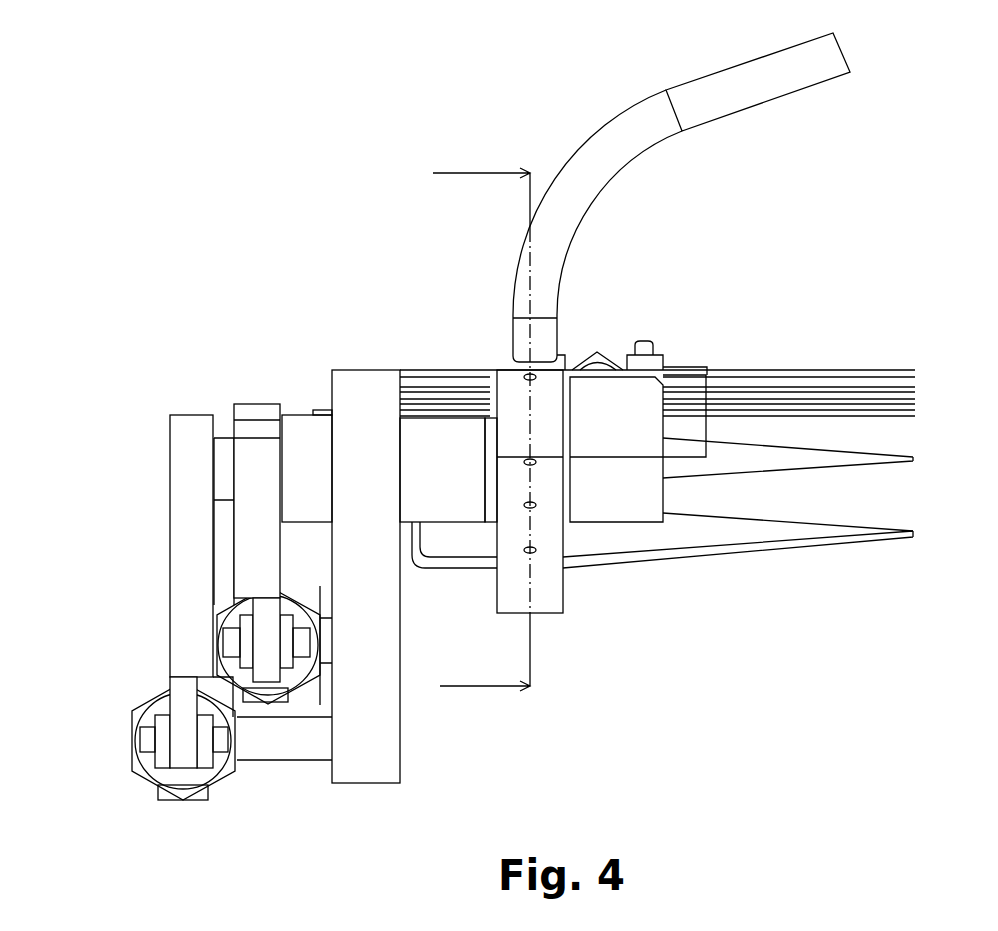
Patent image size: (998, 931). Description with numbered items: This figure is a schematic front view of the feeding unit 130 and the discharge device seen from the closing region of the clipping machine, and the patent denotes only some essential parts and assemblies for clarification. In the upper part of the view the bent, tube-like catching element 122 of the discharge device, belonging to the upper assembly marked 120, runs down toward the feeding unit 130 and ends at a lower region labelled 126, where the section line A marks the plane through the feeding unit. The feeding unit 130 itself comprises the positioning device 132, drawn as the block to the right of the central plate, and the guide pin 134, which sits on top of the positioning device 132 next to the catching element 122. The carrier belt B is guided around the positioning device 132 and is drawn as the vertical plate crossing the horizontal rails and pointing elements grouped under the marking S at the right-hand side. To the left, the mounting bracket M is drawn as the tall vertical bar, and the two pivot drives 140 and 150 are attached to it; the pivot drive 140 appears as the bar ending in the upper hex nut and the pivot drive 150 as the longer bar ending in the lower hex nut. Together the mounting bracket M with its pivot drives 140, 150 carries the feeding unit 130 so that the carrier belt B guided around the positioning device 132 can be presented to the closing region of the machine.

The hose assembly 120 is at (752, 204).
The catching element 122 is at (718, 108).
The hose lower fitting 126 is at (545, 340).
The feeding unit 130 is at (749, 632).
The positioning device 132 is at (605, 500).
The guide pin 134 is at (645, 352).
The pivot drive 140 is at (234, 285).
The pivot drive 150 is at (98, 531).
The mounting bracket M is at (367, 380).
The carrier belt B is at (505, 597).
The tines S is at (913, 418).
The section line A- A is at (472, 427).